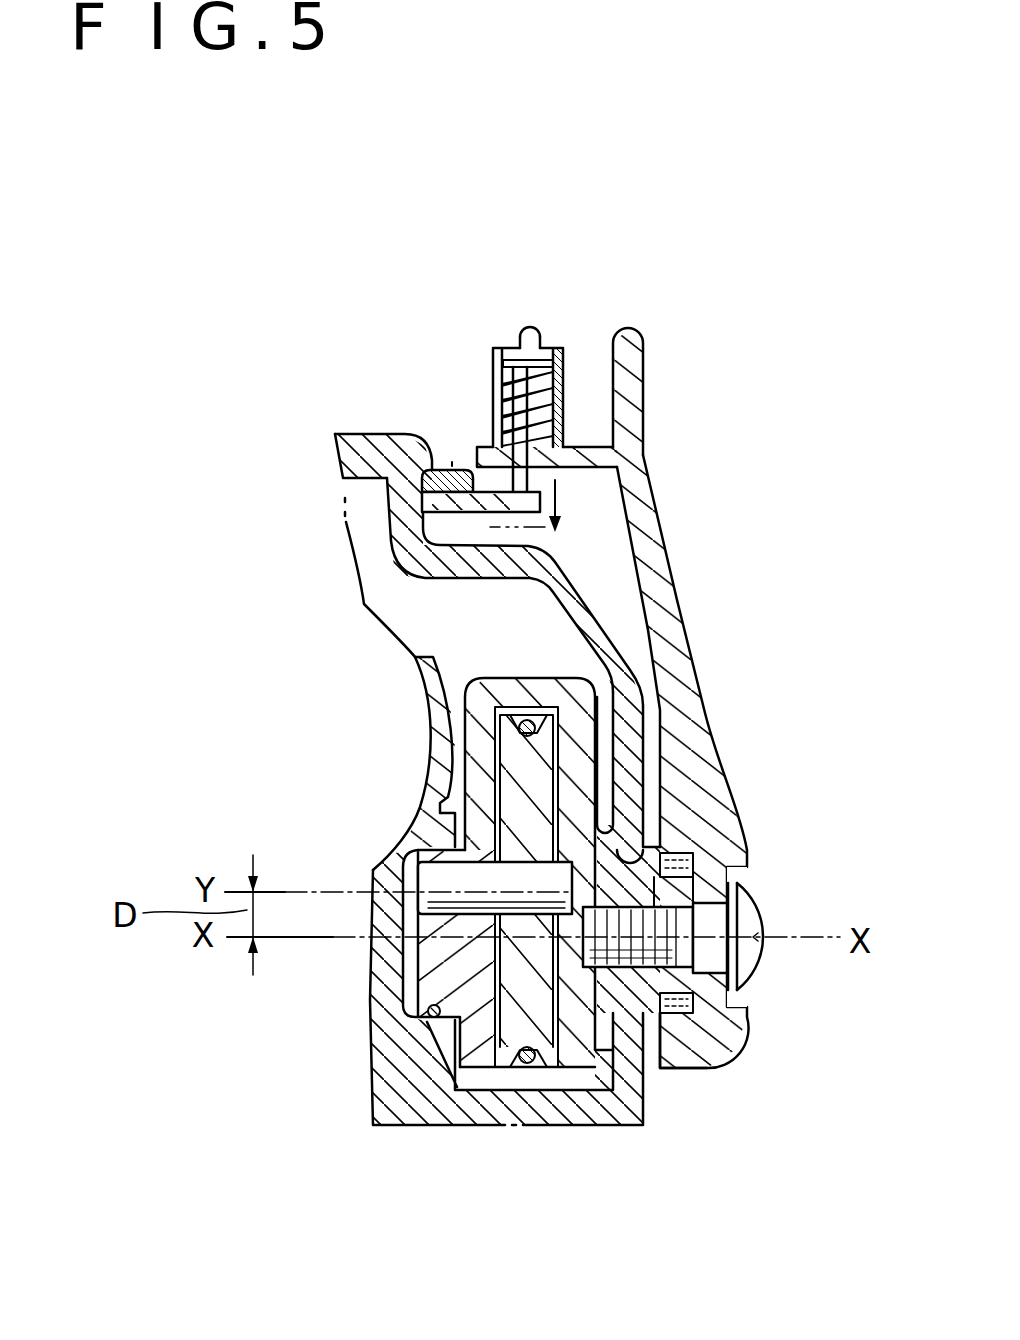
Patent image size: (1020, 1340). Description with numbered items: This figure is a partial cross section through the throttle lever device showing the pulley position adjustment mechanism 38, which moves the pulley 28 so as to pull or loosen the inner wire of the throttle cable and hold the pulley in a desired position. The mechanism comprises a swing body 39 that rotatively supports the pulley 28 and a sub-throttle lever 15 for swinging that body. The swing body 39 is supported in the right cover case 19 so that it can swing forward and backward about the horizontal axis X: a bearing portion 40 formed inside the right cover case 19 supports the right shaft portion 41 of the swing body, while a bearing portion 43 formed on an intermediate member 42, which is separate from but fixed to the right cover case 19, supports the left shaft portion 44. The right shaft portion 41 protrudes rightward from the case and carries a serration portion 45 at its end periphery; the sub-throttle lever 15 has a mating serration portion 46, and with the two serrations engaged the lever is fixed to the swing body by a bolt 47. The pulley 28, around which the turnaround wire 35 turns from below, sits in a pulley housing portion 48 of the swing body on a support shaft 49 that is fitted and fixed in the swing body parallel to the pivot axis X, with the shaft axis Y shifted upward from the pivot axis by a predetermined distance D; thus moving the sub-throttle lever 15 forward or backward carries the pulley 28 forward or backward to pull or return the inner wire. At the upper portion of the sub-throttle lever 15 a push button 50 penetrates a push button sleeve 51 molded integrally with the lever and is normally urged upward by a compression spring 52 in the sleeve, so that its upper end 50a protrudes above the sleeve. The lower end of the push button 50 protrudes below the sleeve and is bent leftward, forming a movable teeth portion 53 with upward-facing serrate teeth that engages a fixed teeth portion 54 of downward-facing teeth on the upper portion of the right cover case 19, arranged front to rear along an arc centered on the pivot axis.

The sub-throttle lever 15 is at (676, 570).
The right cover case 19 is at (370, 453).
The pulley 28 is at (522, 797).
The turnaround wire 35 is at (527, 720).
The pulley position adjustment mechanism 38 is at (680, 509).
The swing body 39 is at (618, 734).
The bearing portion 40 is at (628, 888).
The right shaft portion 41 is at (685, 880).
The intermediate member 42 is at (400, 1052).
The bearing portion 43 is at (430, 1020).
The left shaft portion 44 is at (433, 965).
The serration portion 45 is at (670, 1015).
The serration portion 46 is at (690, 1068).
The bolt 47 is at (755, 925).
The pulley housing portion 48 is at (494, 698).
The support shaft 49 is at (463, 883).
The push button 50 is at (551, 327).
The upper end 50a is at (530, 323).
The push button sleeve 51 is at (556, 405).
The compression spring 52 is at (556, 405).
The movable teeth portion 53 is at (452, 462).
The fixed teeth portion 54 is at (430, 452).